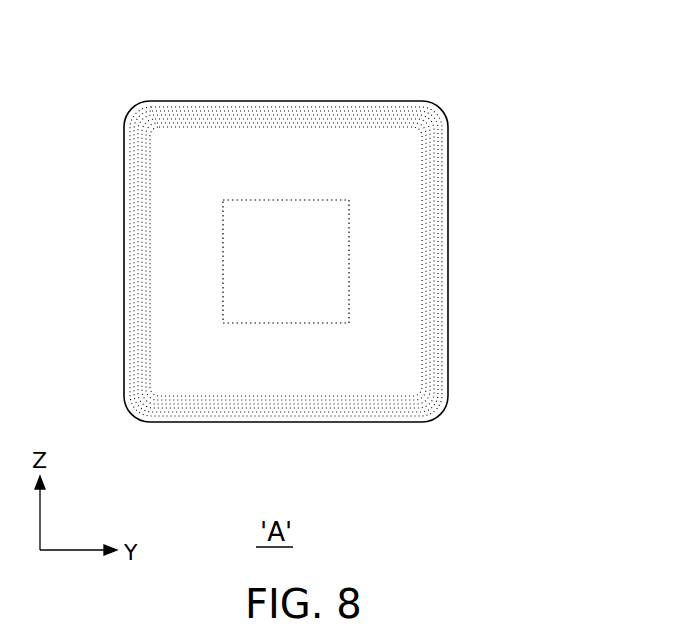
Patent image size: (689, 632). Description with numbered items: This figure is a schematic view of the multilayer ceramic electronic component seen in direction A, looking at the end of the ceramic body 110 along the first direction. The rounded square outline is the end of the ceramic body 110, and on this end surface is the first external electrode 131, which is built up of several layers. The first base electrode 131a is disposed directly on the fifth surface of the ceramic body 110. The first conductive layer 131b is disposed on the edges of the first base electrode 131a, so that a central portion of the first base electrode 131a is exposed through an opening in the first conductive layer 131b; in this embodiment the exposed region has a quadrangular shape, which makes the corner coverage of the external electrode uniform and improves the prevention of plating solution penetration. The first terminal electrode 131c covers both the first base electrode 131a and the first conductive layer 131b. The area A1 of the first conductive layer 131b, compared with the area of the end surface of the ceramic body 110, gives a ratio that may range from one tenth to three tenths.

The ceramic body 110 is at (365, 130).
The first external electrode 131 is at (327, 43).
The first base electrode 131a is at (193, 122).
The first conductive layer 131b is at (253, 115).
The first terminal electrode 131c is at (300, 108).
The area of the first conductive layer A1 is at (270, 367).